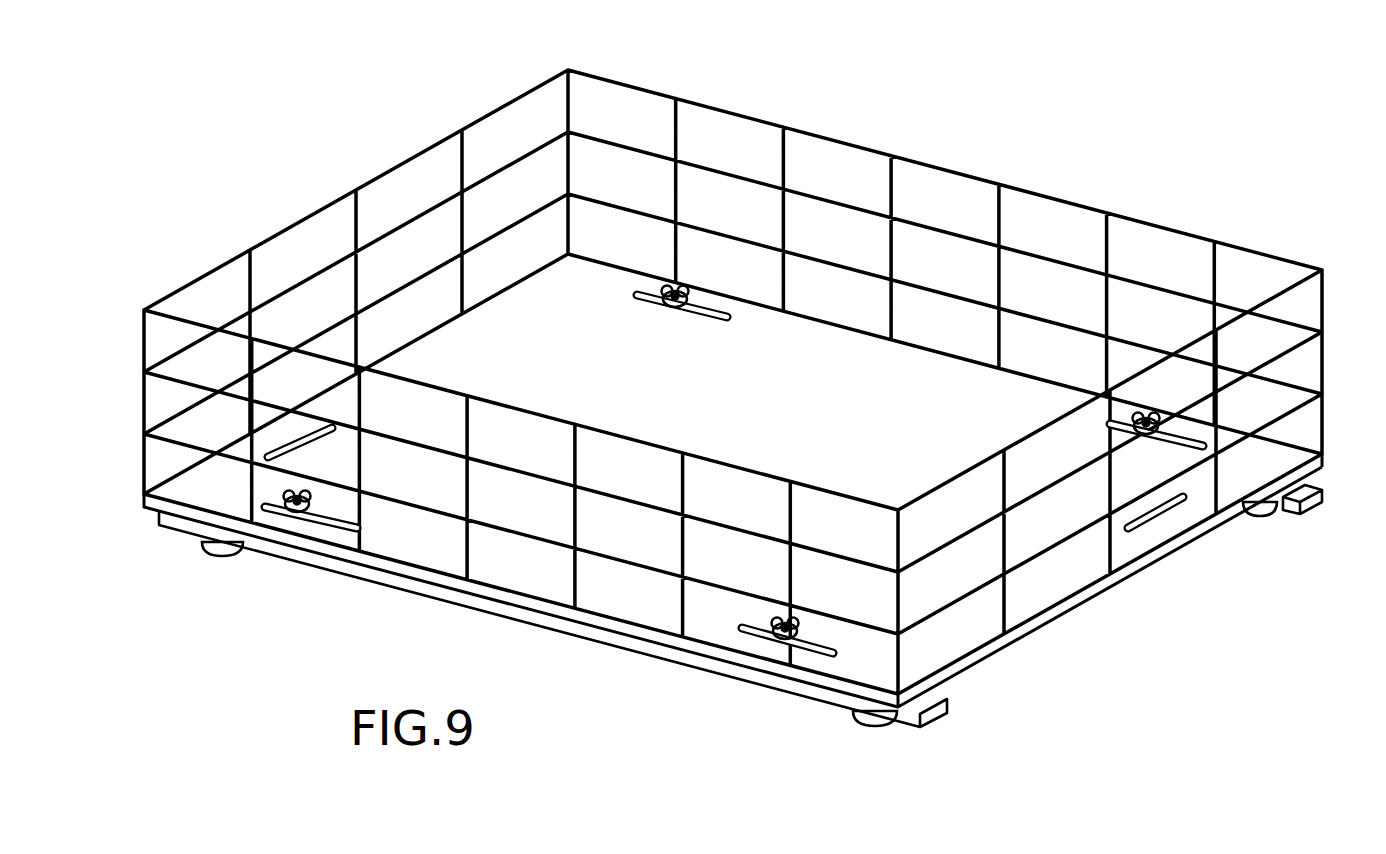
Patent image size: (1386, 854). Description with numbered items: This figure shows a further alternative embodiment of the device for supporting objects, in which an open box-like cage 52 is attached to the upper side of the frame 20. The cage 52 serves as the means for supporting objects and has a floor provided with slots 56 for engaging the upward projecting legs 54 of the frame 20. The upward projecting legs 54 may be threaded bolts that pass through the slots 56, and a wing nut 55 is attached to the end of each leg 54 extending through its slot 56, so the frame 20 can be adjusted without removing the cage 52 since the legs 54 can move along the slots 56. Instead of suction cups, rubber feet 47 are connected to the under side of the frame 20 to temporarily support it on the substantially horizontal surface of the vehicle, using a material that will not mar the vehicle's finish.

The open box-like cage 52 is at (975, 156).
The frame 20 is at (955, 703).
The rubber feet 47 is at (205, 552).
The upward projecting leg 54 is at (676, 290).
The wing nut 55 is at (672, 293).
The slot 56 is at (722, 312).